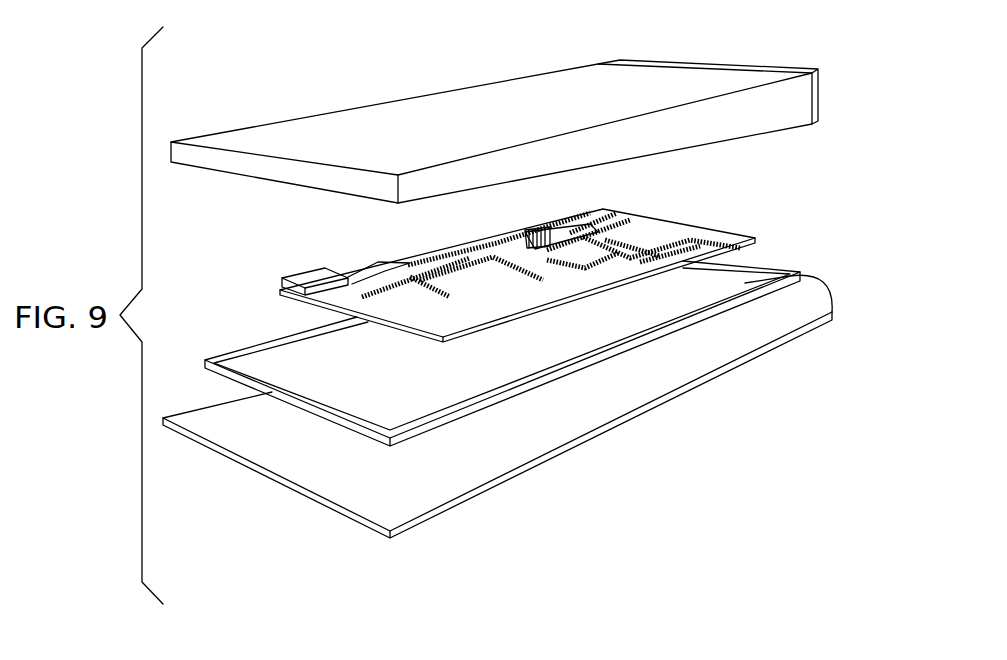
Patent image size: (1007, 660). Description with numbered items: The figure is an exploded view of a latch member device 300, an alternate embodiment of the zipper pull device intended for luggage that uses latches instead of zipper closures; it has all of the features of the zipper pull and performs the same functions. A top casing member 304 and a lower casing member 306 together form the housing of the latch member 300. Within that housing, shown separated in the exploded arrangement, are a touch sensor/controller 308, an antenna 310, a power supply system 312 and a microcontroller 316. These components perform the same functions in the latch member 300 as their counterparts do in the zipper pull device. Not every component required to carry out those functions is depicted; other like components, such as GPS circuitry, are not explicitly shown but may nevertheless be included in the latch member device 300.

The latch member device 300 is at (808, 405).
The top casing member 304 is at (500, 95).
The lower casing member 306 is at (710, 365).
The touch sensor/controller 308 is at (587, 233).
The antenna 310 is at (245, 352).
The power supply system 312 is at (312, 272).
The microcontroller 316 is at (549, 230).